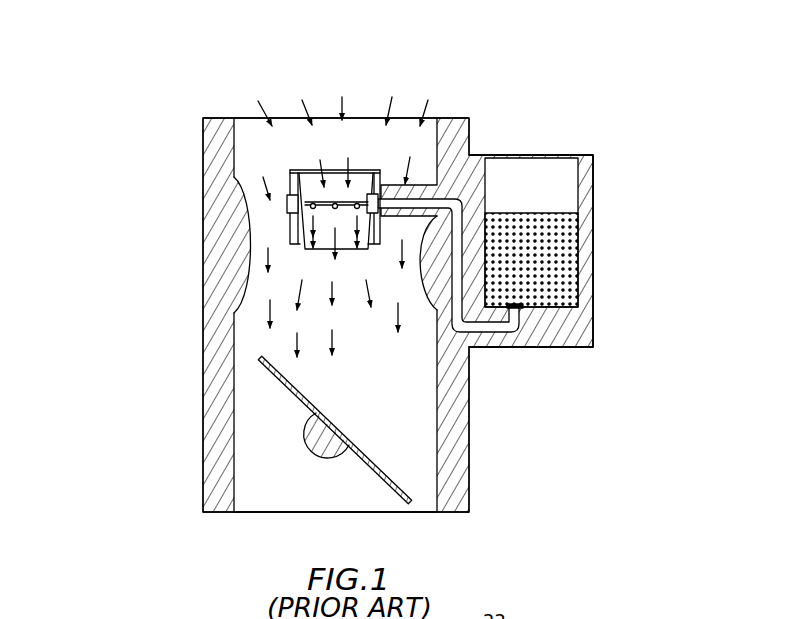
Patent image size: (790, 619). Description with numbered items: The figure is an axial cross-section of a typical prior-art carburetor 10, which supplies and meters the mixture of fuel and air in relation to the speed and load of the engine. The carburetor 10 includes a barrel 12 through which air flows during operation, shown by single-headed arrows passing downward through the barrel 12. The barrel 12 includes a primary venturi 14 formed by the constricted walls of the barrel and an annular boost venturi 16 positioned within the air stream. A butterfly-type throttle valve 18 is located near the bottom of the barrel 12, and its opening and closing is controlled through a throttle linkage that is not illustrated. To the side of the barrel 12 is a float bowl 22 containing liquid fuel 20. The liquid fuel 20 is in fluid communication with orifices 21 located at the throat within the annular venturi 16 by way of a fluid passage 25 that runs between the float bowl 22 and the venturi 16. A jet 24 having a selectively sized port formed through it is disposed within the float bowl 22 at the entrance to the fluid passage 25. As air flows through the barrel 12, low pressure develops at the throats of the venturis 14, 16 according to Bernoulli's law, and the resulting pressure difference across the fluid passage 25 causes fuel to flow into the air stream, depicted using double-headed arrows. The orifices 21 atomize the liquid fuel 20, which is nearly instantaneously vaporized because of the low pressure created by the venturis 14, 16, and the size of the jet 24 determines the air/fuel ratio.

The carburetor 10 is at (100, 298).
The barrel 12 is at (202, 407).
The primary venturi 14 is at (248, 238).
The annular boost venturi 16 is at (336, 203).
The butterfly-type throttle valve 18 is at (387, 486).
The liquid fuel 20 is at (570, 256).
The orifices 21 is at (327, 172).
The float bowl 22 is at (596, 178).
The jet 24 is at (523, 309).
The fluid passage 25 is at (490, 333).